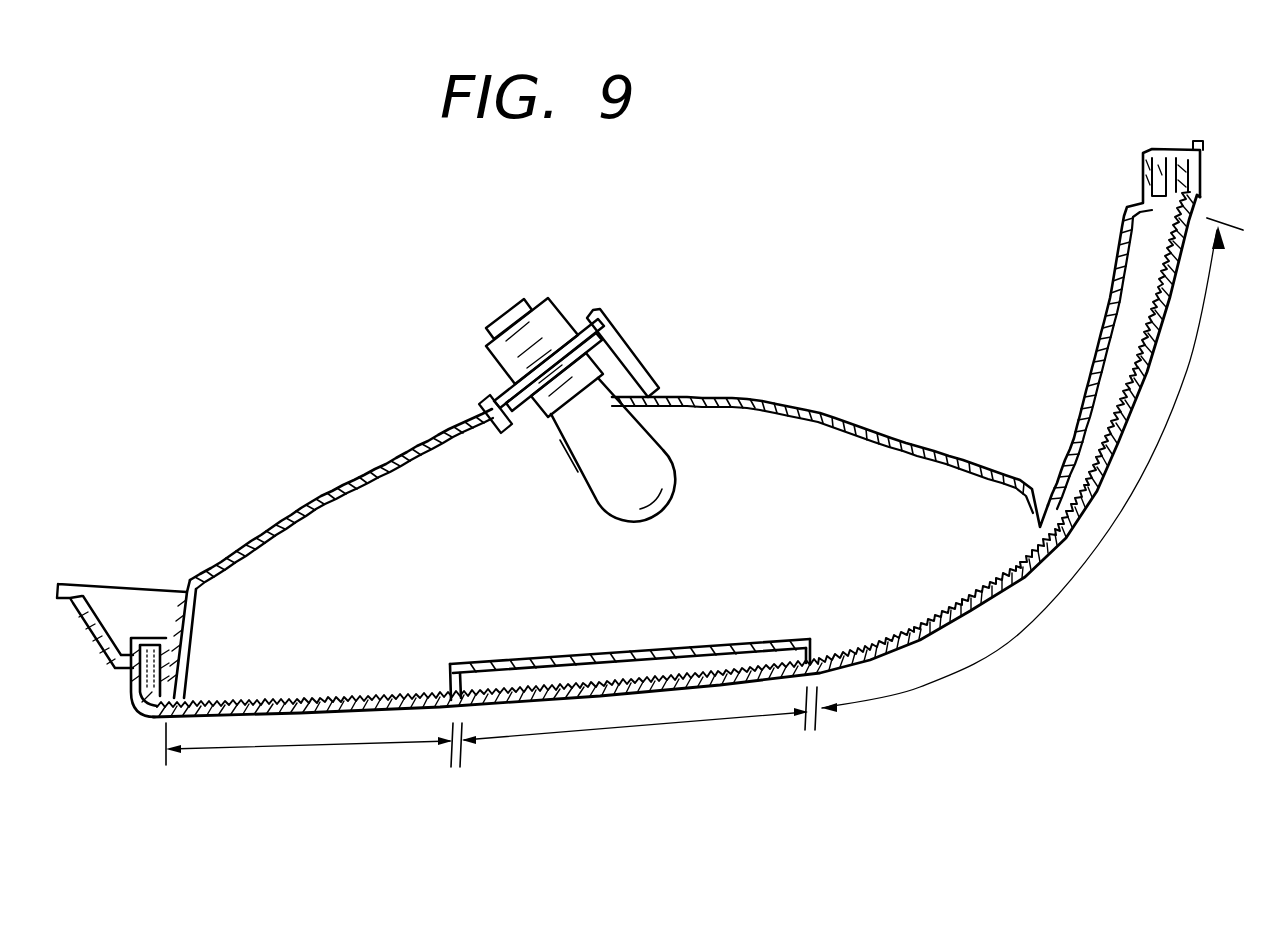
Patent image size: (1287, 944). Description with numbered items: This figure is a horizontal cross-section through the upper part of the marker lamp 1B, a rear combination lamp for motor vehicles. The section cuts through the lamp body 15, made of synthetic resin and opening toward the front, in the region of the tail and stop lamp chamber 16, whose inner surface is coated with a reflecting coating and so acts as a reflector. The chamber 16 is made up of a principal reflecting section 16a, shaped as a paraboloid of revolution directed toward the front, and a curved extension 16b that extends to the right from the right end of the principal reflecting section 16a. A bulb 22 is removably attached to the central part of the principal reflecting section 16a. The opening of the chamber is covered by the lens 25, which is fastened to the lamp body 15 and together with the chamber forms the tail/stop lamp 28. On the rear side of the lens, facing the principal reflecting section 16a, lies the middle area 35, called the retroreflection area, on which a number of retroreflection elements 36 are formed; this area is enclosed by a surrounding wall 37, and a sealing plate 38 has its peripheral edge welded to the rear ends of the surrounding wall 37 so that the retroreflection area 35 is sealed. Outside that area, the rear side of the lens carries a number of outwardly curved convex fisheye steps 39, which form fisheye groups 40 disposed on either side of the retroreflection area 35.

The marker lamp 1B is at (1042, 132).
The lamp body 15 is at (367, 463).
The tail and stop lamp chamber 16 is at (995, 257).
The principal reflecting section 16a is at (848, 444).
The curved extension 16b is at (1112, 352).
The bulb 22 is at (680, 474).
The lens 25 is at (325, 714).
The tail/stop lamp 28 is at (830, 512).
The middle area 35 is at (677, 727).
The retroreflection elements 36 is at (547, 688).
The surrounding wall 37 is at (451, 679).
The sealing plate 38 is at (657, 657).
The fisheye steps 39 is at (1026, 550).
The fisheye groups 40 is at (953, 667).